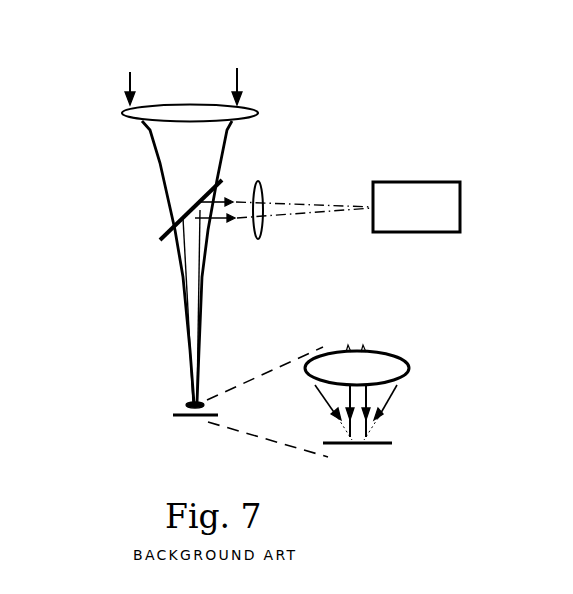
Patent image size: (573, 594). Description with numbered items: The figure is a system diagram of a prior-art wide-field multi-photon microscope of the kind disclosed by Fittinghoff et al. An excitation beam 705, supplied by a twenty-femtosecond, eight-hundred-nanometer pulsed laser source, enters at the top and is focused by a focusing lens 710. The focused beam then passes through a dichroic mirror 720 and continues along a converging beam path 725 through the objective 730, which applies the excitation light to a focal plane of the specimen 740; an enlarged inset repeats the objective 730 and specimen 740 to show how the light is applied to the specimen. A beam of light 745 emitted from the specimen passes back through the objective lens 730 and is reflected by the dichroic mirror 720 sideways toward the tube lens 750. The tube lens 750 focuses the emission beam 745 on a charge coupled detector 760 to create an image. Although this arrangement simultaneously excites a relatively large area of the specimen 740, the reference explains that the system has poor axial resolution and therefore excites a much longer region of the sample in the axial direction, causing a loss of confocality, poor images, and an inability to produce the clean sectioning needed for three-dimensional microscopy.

The excitation beam 705 is at (126, 73).
The focusing lens 710 is at (260, 111).
The focused light beam 725 is at (157, 157).
The dichroic mirror 720 is at (152, 240).
The beam of light emitted from the specimen 745 is at (281, 226).
The tube lens 750 is at (258, 172).
The charge coupled detector 760 is at (392, 233).
The objective 730 is at (186, 405).
The specimen 740 is at (180, 418).